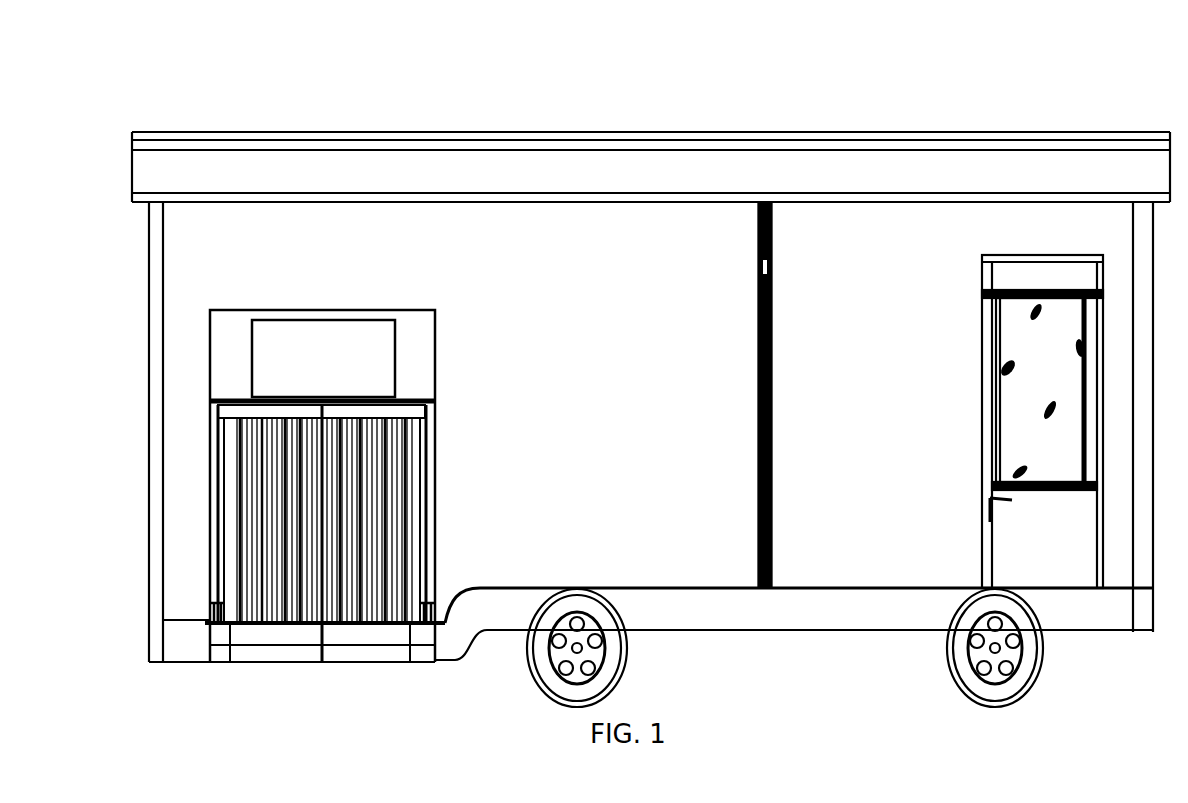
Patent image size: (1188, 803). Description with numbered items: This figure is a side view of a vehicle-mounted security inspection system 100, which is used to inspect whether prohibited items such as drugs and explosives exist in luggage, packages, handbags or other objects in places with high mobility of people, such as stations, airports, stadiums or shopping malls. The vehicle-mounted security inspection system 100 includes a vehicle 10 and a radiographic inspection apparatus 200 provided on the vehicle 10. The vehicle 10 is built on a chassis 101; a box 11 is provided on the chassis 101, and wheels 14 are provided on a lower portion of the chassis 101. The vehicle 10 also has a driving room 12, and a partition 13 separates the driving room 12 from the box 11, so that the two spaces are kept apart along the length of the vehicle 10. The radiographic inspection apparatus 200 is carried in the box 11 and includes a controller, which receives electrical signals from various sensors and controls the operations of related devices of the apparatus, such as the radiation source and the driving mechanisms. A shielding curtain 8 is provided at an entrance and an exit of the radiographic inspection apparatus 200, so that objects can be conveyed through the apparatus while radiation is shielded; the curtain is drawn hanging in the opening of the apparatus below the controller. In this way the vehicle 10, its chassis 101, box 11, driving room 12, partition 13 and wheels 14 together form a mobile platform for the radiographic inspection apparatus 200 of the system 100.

The vehicle-mounted security inspection system 100 is at (659, 49).
The vehicle 10 is at (530, 180).
The box 11 is at (680, 282).
The driving room 12 is at (937, 250).
The partition 13 is at (757, 200).
The wheels 14 is at (993, 598).
The chassis 101 is at (803, 609).
The radiographic inspection apparatus 200 is at (415, 355).
The shielding curtain 8 is at (362, 560).